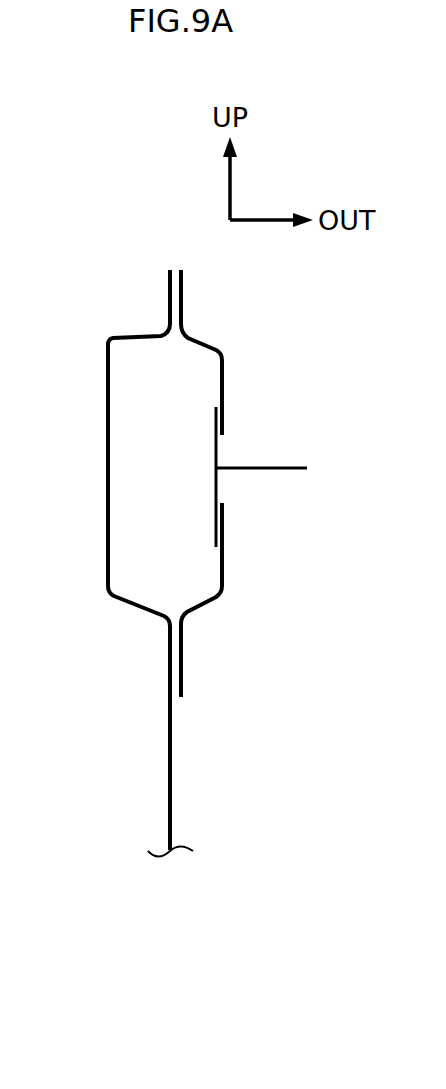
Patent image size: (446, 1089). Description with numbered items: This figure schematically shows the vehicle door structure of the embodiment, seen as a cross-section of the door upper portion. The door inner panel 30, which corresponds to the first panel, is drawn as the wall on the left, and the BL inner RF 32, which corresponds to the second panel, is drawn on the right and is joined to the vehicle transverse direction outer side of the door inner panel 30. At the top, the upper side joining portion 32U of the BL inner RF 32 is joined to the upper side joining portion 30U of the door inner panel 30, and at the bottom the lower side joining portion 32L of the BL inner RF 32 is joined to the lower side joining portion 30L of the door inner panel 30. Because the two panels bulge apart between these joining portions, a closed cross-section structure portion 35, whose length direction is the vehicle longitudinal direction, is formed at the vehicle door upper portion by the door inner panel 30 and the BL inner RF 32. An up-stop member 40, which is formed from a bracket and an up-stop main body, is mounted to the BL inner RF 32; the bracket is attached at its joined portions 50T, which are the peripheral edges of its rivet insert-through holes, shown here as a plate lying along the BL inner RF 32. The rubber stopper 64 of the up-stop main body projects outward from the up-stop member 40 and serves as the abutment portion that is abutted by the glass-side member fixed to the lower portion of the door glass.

The door inner panel 30 is at (103, 452).
The upper side joining portion 30U is at (170, 291).
The lower side joining portion 30L is at (170, 661).
The BL inner RF 32 is at (224, 373).
The upper side joining portion 32U is at (183, 289).
The lower side joining portion 32L is at (183, 659).
The closed cross-section structure portion 35 is at (167, 563).
The joined portions 50T is at (215, 412).
The rubber stopper 64 is at (281, 477).
The up-stop member 40 is at (262, 476).